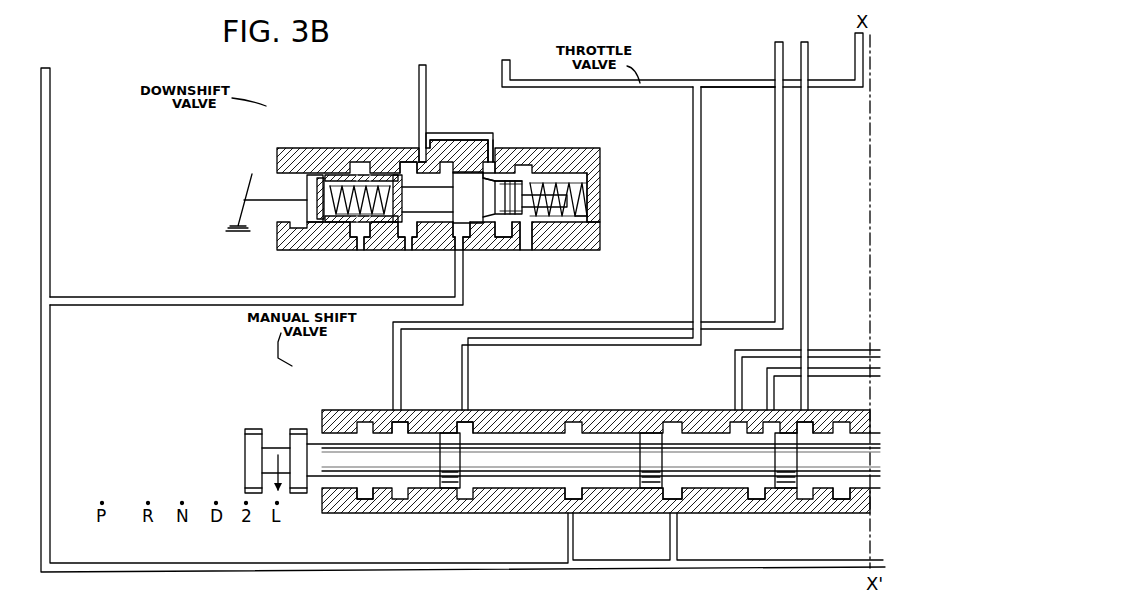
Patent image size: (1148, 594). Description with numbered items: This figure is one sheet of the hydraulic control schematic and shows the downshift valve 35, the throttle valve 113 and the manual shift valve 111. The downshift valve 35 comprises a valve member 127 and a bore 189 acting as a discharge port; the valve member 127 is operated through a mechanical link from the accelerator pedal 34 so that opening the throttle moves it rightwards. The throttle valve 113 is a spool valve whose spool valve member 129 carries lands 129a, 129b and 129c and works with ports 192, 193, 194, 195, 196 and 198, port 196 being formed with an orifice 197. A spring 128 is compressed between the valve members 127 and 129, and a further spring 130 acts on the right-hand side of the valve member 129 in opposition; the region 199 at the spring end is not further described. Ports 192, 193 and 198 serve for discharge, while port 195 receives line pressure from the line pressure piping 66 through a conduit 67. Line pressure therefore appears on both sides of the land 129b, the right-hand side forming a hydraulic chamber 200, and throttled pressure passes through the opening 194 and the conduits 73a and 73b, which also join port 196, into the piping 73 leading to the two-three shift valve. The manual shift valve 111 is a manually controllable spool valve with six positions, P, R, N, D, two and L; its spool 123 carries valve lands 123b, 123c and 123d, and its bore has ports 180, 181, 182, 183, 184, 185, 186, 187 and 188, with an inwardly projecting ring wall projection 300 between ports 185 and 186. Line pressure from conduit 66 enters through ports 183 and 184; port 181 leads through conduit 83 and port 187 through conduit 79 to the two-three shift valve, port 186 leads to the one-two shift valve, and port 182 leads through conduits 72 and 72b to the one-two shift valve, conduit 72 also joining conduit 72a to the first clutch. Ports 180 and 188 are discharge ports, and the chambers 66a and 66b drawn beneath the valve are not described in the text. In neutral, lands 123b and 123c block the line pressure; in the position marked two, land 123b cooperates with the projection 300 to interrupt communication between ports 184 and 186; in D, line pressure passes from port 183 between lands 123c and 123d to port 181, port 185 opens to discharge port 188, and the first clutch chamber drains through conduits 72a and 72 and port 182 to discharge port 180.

The downshift valve 35 is at (299, 146).
The accelerator pedal 34 is at (250, 181).
The bore 189 is at (306, 178).
The valve member 127 is at (314, 223).
The spring 128 is at (333, 176).
The discharge part 192 is at (358, 241).
The port 193 is at (393, 241).
The spool valve member 129 is at (476, 198).
The land 129a is at (512, 172).
The land 129b is at (520, 178).
The land 129c is at (409, 168).
The port 194 is at (421, 160).
The piping 73 is at (427, 82).
The conduit 73a is at (427, 132).
The conduit 73b is at (482, 117).
The orifice 197 is at (496, 163).
The port 196 is at (489, 176).
The throttle valve 113 is at (612, 116).
The spring 130 is at (566, 208).
The spring chamber 199 is at (553, 214).
The port 198 is at (530, 238).
The hydraulic chamber 200 is at (494, 229).
The port 195 is at (463, 230).
The line pressure piping 66 is at (50, 203).
The exhaust chamber 66a is at (578, 541).
The exhaust chamber 66b is at (676, 544).
The conduit 67 is at (174, 303).
The conduit 72 is at (702, 263).
The conduit 72a is at (629, 88).
The conduit 72b is at (712, 88).
The conduit 79 is at (806, 163).
The conduit 83 is at (776, 212).
The manual shift valve 111 is at (349, 396).
The manual valve spool 123 is at (311, 478).
The valve land 123b is at (787, 466).
The valve land 123c is at (652, 414).
The valve land 123d is at (452, 467).
The discharge port 180 is at (364, 498).
The port 181 is at (397, 413).
The port 182 is at (467, 413).
The port 183 is at (568, 499).
The port 184 is at (673, 499).
The port 185 is at (735, 415).
The port 186 is at (767, 415).
The port 187 is at (808, 417).
The discharge port 188 is at (842, 500).
The inwardly projecting ring wall projection 300 is at (757, 493).